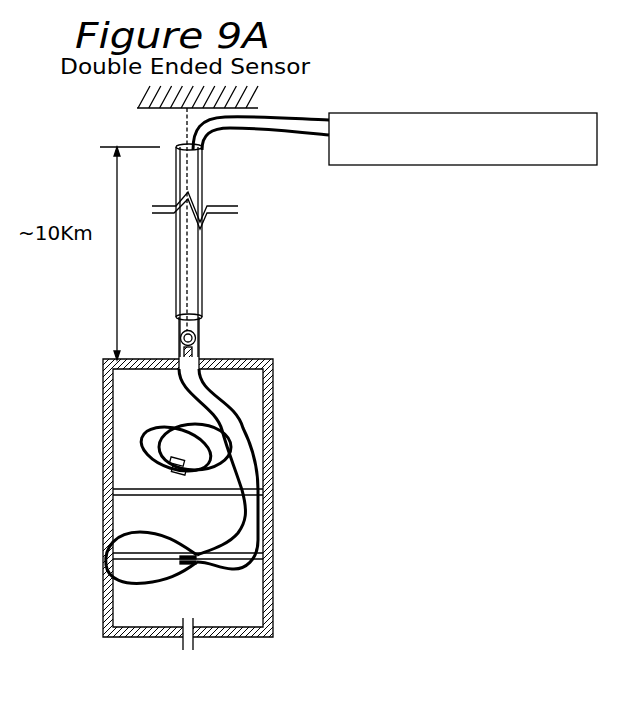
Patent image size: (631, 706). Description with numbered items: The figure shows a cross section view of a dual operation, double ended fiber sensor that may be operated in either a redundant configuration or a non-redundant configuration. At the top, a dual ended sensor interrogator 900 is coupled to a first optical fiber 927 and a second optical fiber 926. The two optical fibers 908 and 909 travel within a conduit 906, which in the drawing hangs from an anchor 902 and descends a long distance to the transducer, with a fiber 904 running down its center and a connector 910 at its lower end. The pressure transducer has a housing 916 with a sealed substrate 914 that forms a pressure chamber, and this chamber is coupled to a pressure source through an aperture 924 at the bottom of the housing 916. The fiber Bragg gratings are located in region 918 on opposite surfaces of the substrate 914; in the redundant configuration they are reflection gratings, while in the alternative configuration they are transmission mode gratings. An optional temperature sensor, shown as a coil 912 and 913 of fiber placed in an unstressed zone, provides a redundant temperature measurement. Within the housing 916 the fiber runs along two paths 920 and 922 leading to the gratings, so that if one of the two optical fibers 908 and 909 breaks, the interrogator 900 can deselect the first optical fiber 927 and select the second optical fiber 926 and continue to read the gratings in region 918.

The dual ended sensor interrogator 900 is at (463, 123).
The surface anchor 902 is at (150, 110).
The optical fiber 904 is at (190, 275).
The conduit 906 is at (199, 302).
The optical fiber 908 is at (202, 314).
The optical fiber 909 is at (177, 305).
The connector 910 is at (198, 334).
The temperature sensor 912 is at (165, 478).
The temperature sensor 913 is at (157, 442).
The substrate 914 is at (110, 548).
The housing 916 is at (108, 578).
The grating region 918 is at (195, 552).
The first fiber path 920 is at (232, 527).
The second fiber path 922 is at (250, 605).
The aperture 924 is at (188, 653).
The second optical fiber 926 is at (293, 143).
The first optical fiber 927 is at (297, 113).